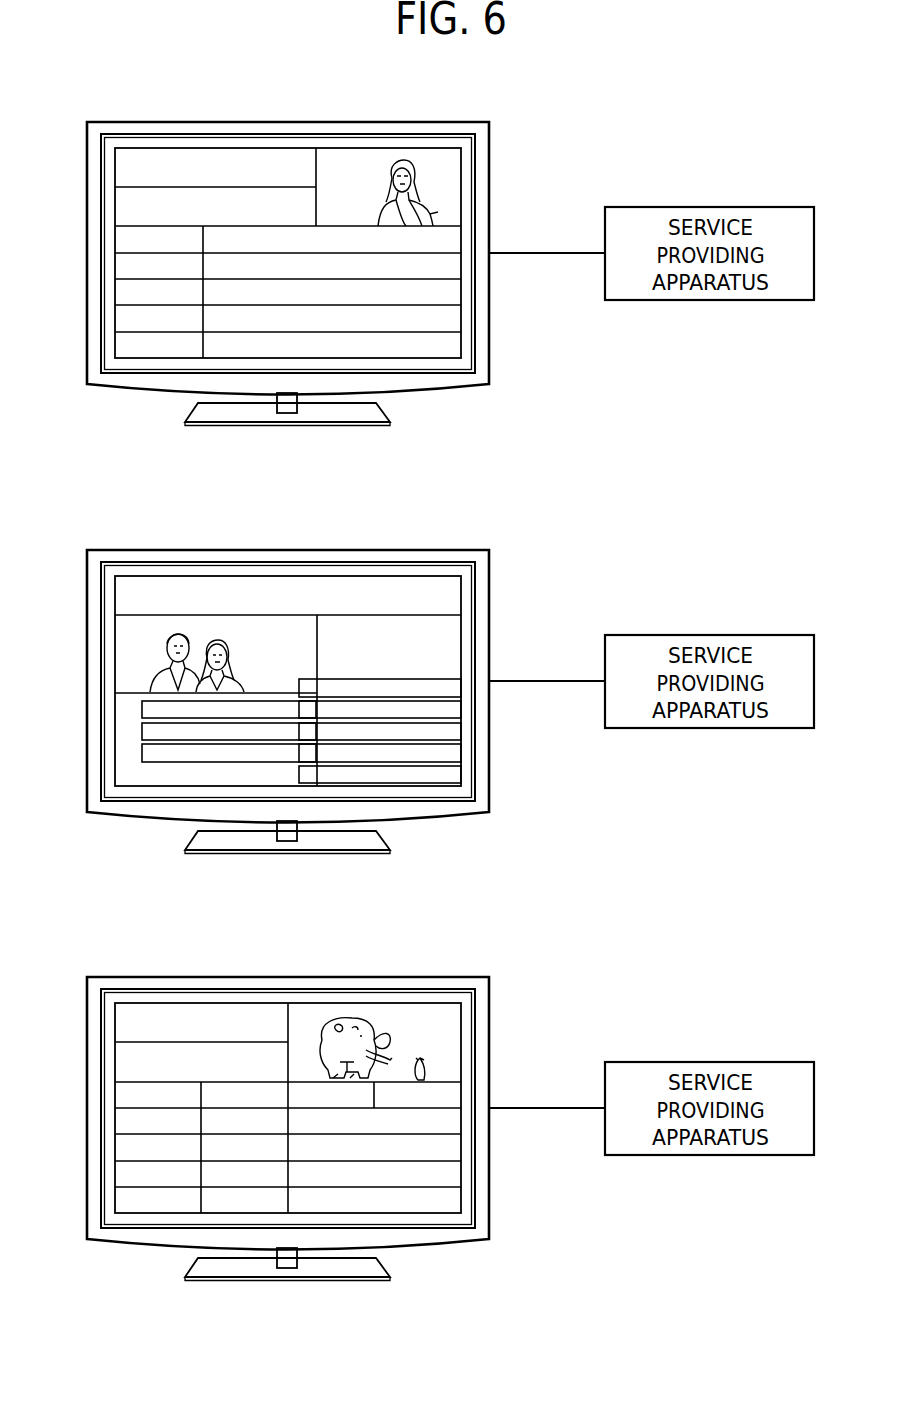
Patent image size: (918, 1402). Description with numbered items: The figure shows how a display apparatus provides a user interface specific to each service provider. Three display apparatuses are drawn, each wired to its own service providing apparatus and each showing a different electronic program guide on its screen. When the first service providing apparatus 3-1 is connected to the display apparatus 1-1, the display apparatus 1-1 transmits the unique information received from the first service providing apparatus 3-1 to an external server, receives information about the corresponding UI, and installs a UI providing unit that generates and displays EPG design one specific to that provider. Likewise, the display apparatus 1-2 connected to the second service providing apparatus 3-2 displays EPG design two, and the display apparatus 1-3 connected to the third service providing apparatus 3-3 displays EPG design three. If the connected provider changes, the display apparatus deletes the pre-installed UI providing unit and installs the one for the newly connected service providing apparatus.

The display apparatus 1-1 is at (288, 300).
The display apparatus 1-2 is at (288, 728).
The display apparatus 1-3 is at (288, 1155).
The first service providing apparatus 3-1 is at (709, 292).
The second service providing apparatus 3-2 is at (709, 720).
The third service providing apparatus 3-3 is at (709, 1147).